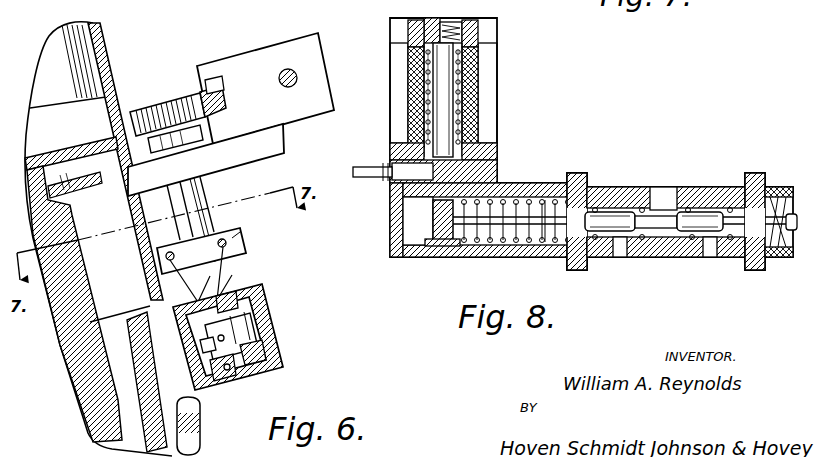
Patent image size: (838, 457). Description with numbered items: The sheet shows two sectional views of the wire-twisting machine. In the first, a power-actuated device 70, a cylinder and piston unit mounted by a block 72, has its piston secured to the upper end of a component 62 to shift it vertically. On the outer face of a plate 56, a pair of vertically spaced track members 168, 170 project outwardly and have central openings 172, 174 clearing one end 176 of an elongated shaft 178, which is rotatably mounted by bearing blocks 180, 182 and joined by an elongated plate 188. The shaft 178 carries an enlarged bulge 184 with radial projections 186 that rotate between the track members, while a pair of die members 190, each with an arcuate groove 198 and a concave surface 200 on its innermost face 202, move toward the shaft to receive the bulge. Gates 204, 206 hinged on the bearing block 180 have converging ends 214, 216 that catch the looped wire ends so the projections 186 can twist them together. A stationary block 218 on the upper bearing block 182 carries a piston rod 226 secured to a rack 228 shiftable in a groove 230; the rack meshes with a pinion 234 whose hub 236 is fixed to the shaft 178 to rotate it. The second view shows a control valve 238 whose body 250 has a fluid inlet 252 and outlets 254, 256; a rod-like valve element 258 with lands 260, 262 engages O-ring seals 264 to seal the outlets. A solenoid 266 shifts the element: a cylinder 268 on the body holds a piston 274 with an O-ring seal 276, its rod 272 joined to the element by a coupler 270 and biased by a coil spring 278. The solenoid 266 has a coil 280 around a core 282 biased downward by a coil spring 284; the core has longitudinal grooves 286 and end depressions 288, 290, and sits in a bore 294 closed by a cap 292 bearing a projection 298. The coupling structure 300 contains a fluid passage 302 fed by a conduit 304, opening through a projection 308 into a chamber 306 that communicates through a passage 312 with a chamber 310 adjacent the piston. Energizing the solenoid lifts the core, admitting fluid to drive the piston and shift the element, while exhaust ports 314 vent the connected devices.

In FIG. 6, the plate 56 is at (157, 222).
In FIG. 6, the component 62 is at (72, 248).
In FIG. 6, the power-actuated device 70 is at (70, 67).
In FIG. 6, the block 72 is at (86, 156).
In FIG. 6, the track member 168 is at (260, 282).
In FIG. 6, the track member 170 is at (270, 370).
In FIG. 6, the central opening 172 is at (228, 280).
In FIG. 6, the central opening 174 is at (250, 370).
In FIG. 6, the shaft end 176 is at (216, 381).
In FIG. 6, the shaft 178 is at (201, 226).
In FIG. 6, the bearing block 180 is at (240, 238).
In FIG. 6, the bearing block 182 is at (248, 147).
In FIG. 6, the bulge 184 is at (273, 347).
In FIG. 6, the projections 186 is at (220, 333).
In FIG. 6, the plate 188 is at (252, 319).
In FIG. 6, the die members 190 is at (233, 340).
In FIG. 6, the arcuate groove 198 is at (150, 360).
In FIG. 6, the concave surface 200 is at (204, 405).
In FIG. 6, the innermost face 202 is at (262, 300).
In FIG. 6, the gate 204 is at (238, 243).
In FIG. 6, the gate 206 is at (157, 283).
In FIG. 6, the converging end 214 is at (245, 253).
In FIG. 6, the converging end 216 is at (174, 257).
In FIG. 6, the stationary block 218 is at (280, 53).
In FIG. 6, the piston rod 226 is at (289, 88).
In FIG. 6, the rack 228 is at (212, 85).
In FIG. 6, the groove 230 is at (222, 86).
In FIG. 6, the pinion 234 is at (150, 110).
In FIG. 6, the hub 236 is at (195, 130).
In FIG. 8, the valve 238 is at (627, 190).
In FIG. 8, the body 250 is at (698, 214).
In FIG. 8, the fluid inlet 252 is at (670, 190).
In FIG. 8, the fluid outlet 254 is at (620, 252).
In FIG. 8, the fluid outlet 256 is at (707, 252).
In FIG. 8, the valve element 258 is at (640, 232).
In FIG. 8, the land 260 is at (650, 228).
In FIG. 8, the land 262 is at (772, 190).
In FIG. 8, the O-ring seals 264 is at (645, 208).
In FIG. 8, the solenoid 266 is at (497, 110).
In FIG. 8, the cylinder 268 is at (540, 190).
In FIG. 8, the coupler 270 is at (577, 175).
In FIG. 8, the rod 272 is at (470, 250).
In FIG. 8, the piston 274 is at (410, 258).
In FIG. 8, the O-ring seal 276 is at (445, 250).
In FIG. 8, the coil spring 278 is at (497, 242).
In FIG. 8, the coil 280 is at (478, 58).
In FIG. 8, the core 282 is at (478, 78).
In FIG. 8, the coil spring 284 is at (478, 95).
In FIG. 8, the grooves 286 is at (470, 44).
In FIG. 8, the depression 288 is at (485, 20).
In FIG. 8, the depression 290 is at (463, 22).
In FIG. 8, the cap 292 is at (440, 20).
In FIG. 8, the bore 294 is at (412, 22).
In FIG. 8, the projection 298 is at (410, 42).
In FIG. 8, the coupling structure 300 is at (400, 150).
In FIG. 8, the fluid passage 302 is at (396, 197).
In FIG. 8, the conduit 304 is at (372, 168).
In FIG. 8, the chamber 306 is at (408, 128).
In FIG. 8, the projection 308 is at (480, 152).
In FIG. 8, the chamber 310 is at (405, 240).
In FIG. 8, the fluid passage 312 is at (475, 175).
In FIG. 8, the exhaust port 314 is at (530, 242).